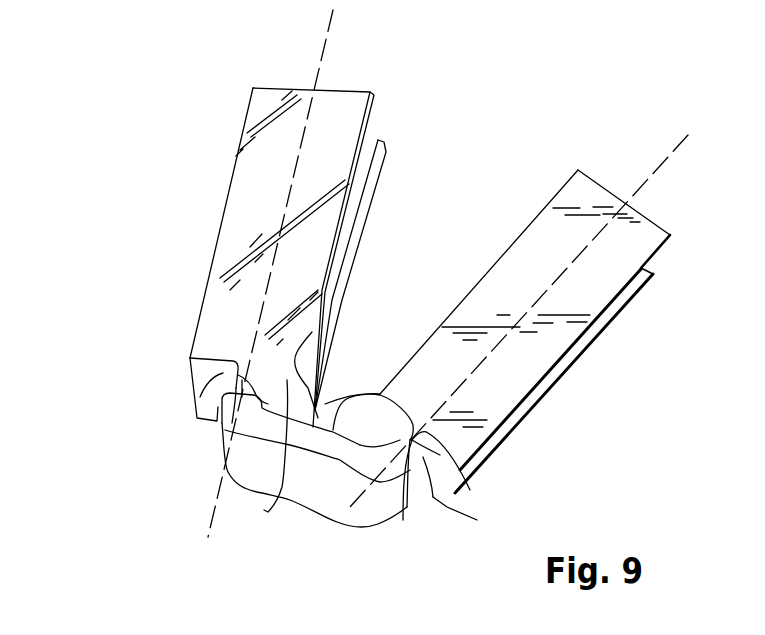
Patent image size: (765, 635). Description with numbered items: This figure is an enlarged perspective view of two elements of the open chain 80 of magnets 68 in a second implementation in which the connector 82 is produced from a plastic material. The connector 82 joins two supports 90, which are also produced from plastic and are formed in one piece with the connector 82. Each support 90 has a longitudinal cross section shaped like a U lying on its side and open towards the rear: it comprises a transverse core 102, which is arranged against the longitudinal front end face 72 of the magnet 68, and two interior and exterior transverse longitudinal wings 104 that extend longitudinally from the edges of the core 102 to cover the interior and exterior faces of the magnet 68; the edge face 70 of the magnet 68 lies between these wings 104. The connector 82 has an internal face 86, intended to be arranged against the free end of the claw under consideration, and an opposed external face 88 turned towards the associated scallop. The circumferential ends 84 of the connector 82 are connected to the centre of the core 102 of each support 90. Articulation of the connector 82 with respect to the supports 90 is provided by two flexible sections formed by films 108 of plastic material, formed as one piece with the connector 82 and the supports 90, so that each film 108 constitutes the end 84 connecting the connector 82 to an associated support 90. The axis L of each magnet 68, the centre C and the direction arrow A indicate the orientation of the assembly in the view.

The open chain 80 is at (143, 138).
The connector 82 is at (297, 513).
The circumferential ends 84 is at (206, 376).
The internal face 86 is at (337, 418).
The external face 88 is at (327, 533).
The support 90 is at (417, 307).
The transverse core 102 is at (212, 419).
The transverse longitudinal wings 104 is at (258, 187).
The film 108 is at (327, 333).
The magnet 68 is at (357, 192).
The edge face 70 is at (343, 260).
The longitudinal front end face 72 is at (368, 140).
The longitudinal axis L is at (330, 33).
The centre C is at (250, 302).
The direction arrow A is at (535, 110).